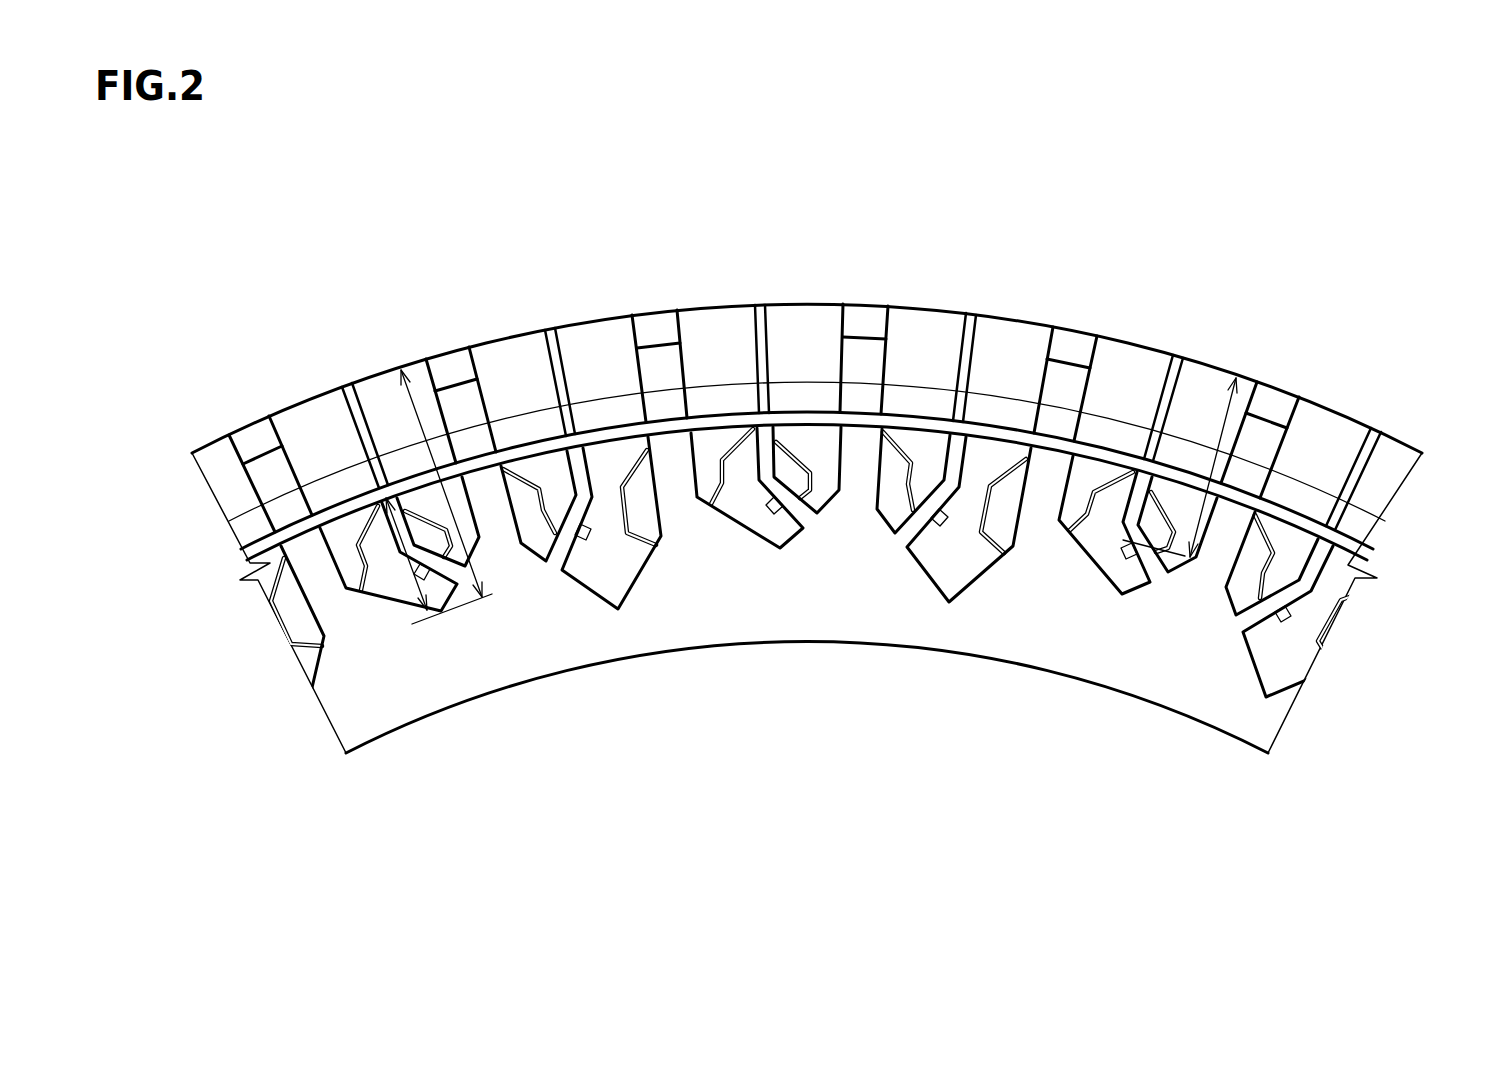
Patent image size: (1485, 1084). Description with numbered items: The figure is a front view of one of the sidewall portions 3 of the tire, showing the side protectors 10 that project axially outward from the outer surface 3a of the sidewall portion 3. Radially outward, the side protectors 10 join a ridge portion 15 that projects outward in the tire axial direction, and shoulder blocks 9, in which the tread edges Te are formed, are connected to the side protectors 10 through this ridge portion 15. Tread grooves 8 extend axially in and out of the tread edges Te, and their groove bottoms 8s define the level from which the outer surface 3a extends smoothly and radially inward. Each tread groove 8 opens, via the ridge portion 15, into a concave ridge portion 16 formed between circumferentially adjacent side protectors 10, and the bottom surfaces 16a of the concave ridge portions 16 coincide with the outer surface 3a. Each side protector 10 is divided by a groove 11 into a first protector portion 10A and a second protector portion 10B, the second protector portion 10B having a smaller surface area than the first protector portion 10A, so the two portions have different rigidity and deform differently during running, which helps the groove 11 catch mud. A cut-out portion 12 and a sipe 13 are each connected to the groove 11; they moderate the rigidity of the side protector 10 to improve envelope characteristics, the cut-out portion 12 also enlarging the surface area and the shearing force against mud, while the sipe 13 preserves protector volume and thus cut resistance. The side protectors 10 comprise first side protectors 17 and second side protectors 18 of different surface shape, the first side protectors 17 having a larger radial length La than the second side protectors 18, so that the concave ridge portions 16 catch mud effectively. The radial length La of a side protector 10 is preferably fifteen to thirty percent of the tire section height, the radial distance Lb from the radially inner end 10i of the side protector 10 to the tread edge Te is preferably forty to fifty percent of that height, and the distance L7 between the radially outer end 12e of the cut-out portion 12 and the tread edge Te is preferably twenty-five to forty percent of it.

The sidewall portion 3 is at (1373, 654).
The outer surface 3a is at (1210, 580).
The tread groove 8 is at (876, 325).
The groove bottom 8s is at (858, 330).
The shoulder block 9 is at (1135, 376).
The side protector 10 is at (771, 507).
The first protector portion 10A is at (610, 455).
The second protector portion 10B is at (810, 440).
The radially inner end 10i is at (440, 612).
The groove 11 is at (560, 547).
The cut-out portion 12 is at (575, 533).
The radially outer end 12e is at (1135, 542).
The sipe 13 is at (526, 550).
The ridge portion 15 is at (1357, 543).
The concave ridge portion 16 is at (862, 458).
The bottom surface 16a is at (1040, 512).
The first side protector 17 is at (547, 466).
The second side protector 18 is at (717, 442).
The radial length La is at (390, 547).
The radial distance Lb is at (417, 415).
The distance L7 is at (1218, 433).
The tread edge Te is at (1200, 360).